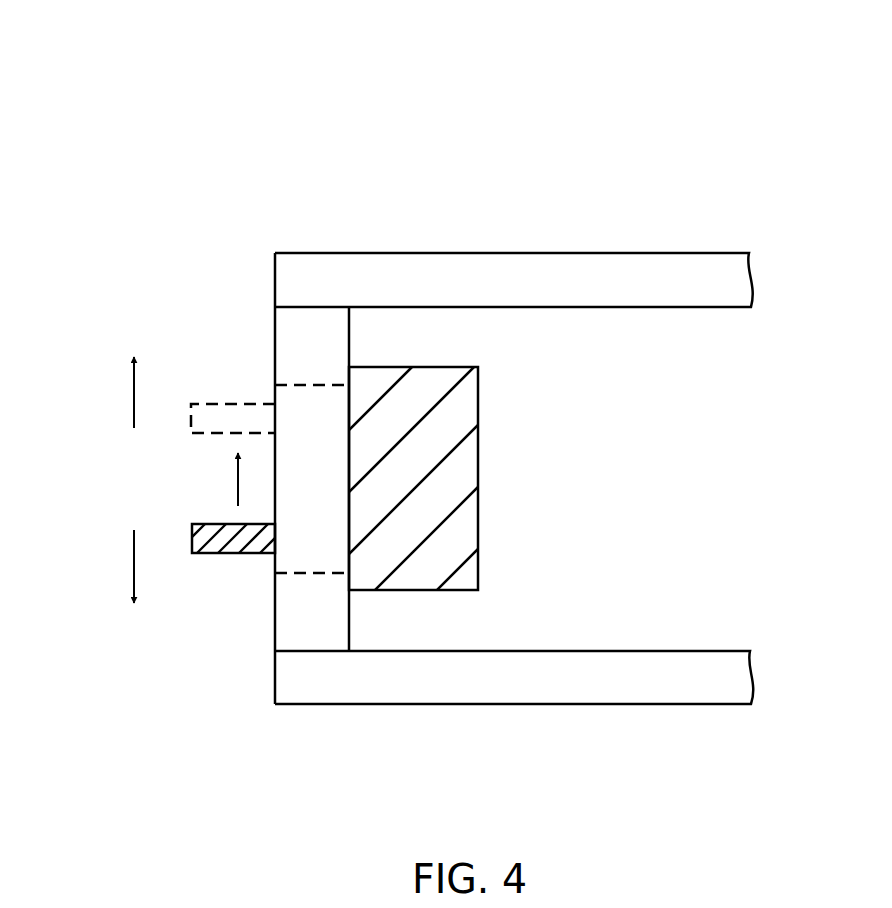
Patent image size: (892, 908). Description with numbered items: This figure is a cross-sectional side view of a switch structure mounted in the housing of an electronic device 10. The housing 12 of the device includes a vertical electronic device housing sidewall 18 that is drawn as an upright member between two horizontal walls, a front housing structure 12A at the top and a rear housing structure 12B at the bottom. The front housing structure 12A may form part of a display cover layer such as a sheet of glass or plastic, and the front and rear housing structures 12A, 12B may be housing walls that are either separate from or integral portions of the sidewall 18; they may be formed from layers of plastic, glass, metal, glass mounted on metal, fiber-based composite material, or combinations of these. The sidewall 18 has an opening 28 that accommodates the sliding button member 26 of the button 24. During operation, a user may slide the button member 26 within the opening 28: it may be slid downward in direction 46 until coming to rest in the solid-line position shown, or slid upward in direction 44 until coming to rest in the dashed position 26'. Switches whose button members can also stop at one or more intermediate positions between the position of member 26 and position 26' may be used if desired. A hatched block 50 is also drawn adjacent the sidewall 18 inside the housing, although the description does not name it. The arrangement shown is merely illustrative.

The electronic device 10 is at (702, 65).
The housing 12 is at (246, 678).
The front housing structure 12A is at (568, 265).
The rear housing structure 12B is at (586, 684).
The electronic device housing sidewall 18 is at (275, 328).
The button 24 is at (154, 484).
The sliding button member 26 is at (235, 572).
The upward position of button member 26' is at (232, 385).
The opening 28 is at (310, 574).
The upward direction 44 is at (134, 395).
The downward direction 46 is at (134, 559).
The insert block 50 is at (479, 458).